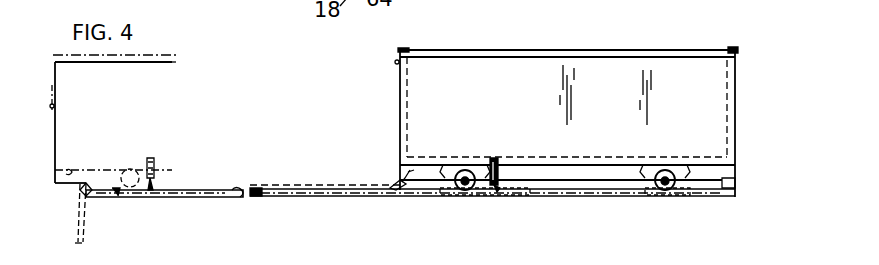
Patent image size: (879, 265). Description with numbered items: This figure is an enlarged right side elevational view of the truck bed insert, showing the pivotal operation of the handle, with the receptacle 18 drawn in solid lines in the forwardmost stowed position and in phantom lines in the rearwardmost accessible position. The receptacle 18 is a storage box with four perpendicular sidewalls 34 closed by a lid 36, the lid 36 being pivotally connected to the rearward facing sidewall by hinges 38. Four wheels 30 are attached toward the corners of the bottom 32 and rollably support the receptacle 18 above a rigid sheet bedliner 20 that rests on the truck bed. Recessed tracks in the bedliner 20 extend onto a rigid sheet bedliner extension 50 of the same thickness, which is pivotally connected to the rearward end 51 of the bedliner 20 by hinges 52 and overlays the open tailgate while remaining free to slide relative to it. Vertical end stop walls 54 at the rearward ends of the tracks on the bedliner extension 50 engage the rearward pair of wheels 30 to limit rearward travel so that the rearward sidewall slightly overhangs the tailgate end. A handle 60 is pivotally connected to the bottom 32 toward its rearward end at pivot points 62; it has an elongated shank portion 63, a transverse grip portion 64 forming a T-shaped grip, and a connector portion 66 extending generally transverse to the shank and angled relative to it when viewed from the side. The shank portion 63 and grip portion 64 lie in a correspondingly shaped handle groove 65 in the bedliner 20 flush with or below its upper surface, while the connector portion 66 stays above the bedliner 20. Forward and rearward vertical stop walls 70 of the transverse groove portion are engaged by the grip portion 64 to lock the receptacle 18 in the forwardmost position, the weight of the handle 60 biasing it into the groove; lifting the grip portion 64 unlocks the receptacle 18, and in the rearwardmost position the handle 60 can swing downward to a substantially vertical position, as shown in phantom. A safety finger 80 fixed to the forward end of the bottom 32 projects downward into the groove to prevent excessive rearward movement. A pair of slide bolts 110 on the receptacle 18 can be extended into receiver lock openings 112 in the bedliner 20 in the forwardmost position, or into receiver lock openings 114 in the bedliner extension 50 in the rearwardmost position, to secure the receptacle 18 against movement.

The receptacle 18 is at (120, 73).
The bedliner 20 is at (340, 197).
The wheels 30 is at (125, 166).
The bottom 32 is at (571, 157).
The sidewalls 34 is at (62, 106).
The lid 36 is at (100, 62).
The hinges 38 is at (737, 52).
The bedliner extension 50 is at (198, 190).
The rearward end 51 is at (226, 196).
The hinges 52 is at (240, 187).
The end stop walls 54 is at (115, 193).
The handle 60 is at (84, 228).
The pivot points 62 is at (68, 170).
The shank portion 63 is at (302, 197).
The grip portion 64 is at (263, 190).
The handle groove 65 is at (405, 194).
The connector portion 66 is at (75, 197).
The stop walls 70 is at (258, 196).
The safety finger 80 is at (738, 183).
The slide bolts 110 is at (150, 160).
The receiver lock openings 112 is at (498, 191).
The receiver lock openings 114 is at (152, 186).